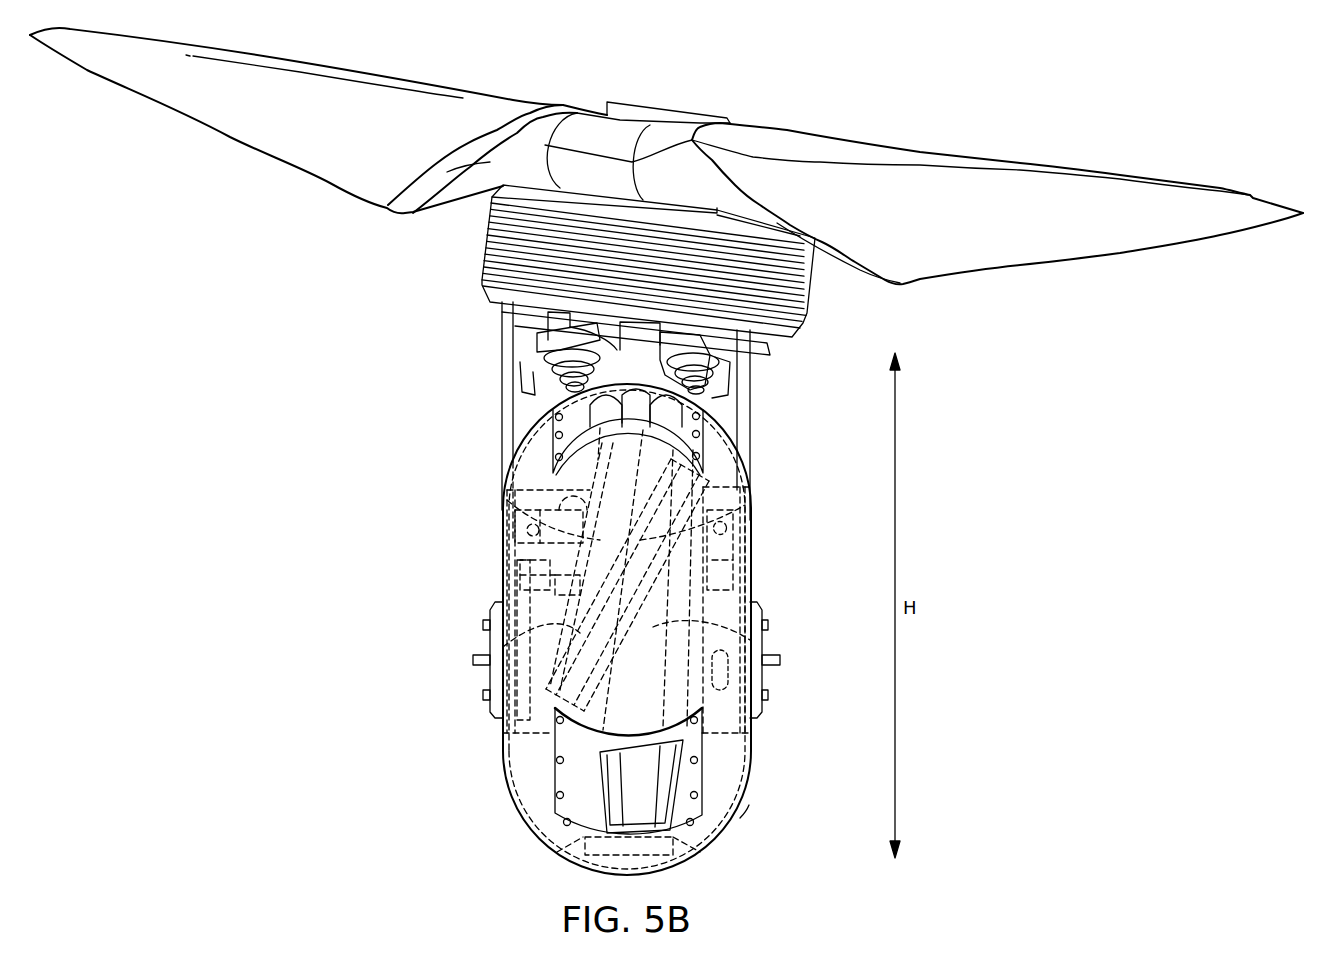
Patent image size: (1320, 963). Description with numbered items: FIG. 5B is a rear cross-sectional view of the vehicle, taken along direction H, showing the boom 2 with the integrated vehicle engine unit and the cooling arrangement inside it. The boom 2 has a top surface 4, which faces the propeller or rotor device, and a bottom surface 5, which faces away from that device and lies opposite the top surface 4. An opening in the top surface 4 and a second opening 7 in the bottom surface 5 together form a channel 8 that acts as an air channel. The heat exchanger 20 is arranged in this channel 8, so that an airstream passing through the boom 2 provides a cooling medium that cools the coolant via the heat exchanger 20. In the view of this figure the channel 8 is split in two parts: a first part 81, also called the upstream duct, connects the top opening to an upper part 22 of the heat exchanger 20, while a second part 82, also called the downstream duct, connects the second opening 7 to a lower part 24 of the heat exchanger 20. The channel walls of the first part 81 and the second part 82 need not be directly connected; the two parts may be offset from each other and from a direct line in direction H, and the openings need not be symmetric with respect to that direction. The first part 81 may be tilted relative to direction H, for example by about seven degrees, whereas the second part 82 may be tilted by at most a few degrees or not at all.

The boom 2 is at (530, 799).
The top surface 4 is at (532, 418).
The bottom surface 5 is at (733, 824).
The second opening 7 is at (638, 770).
The channel 8 is at (668, 424).
The first part of the channel 81 is at (575, 560).
The second part of the channel 82 is at (750, 639).
The heat exchanger 20 is at (740, 515).
The upper part of the heat exchanger 22 is at (530, 633).
The lower part of the heat exchanger 24 is at (707, 553).